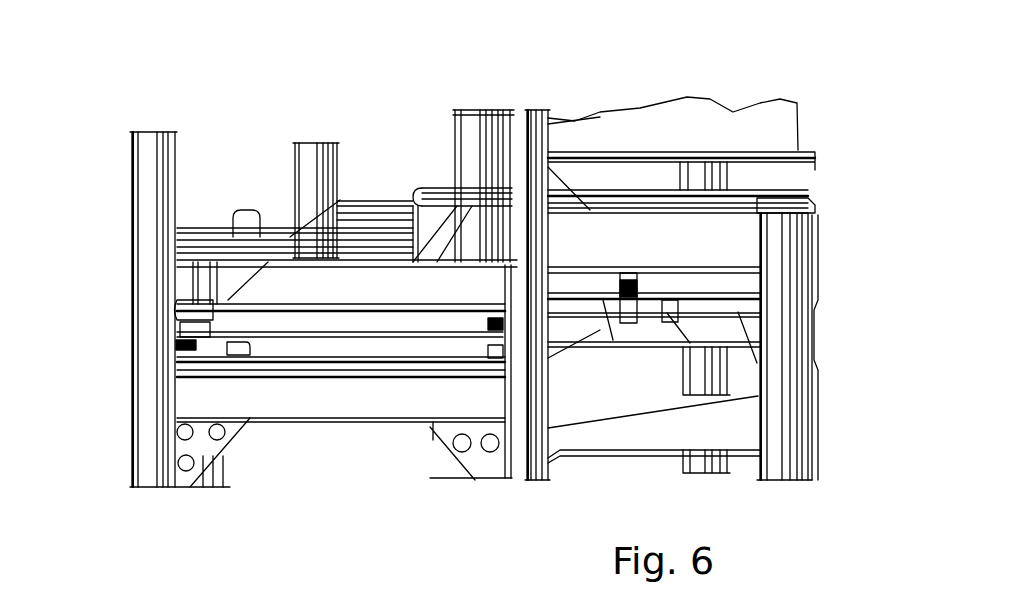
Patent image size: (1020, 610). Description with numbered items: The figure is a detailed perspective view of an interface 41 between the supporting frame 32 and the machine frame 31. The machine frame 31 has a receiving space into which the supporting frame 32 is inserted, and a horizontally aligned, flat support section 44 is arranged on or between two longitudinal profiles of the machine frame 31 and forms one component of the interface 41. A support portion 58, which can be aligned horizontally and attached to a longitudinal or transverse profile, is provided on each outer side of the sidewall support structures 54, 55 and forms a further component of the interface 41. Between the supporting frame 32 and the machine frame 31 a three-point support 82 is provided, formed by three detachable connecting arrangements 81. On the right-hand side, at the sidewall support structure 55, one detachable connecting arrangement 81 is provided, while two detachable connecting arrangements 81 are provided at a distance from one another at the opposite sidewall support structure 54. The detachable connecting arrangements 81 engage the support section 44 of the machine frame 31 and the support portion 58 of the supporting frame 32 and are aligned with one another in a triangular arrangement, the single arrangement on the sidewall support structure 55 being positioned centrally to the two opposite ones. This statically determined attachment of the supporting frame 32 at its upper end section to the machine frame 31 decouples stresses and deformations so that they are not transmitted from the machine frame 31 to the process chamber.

The machine frame 31 is at (520, 487).
The supporting frame 32 is at (281, 305).
The interface 41 is at (322, 118).
The support section 44 is at (177, 408).
The sidewall support structure 54 is at (118, 290).
The sidewall support structure 55 is at (812, 294).
The support portion 58 is at (178, 318).
The detachable connecting arrangement 81 is at (180, 358).
The three-point support 82 is at (175, 345).